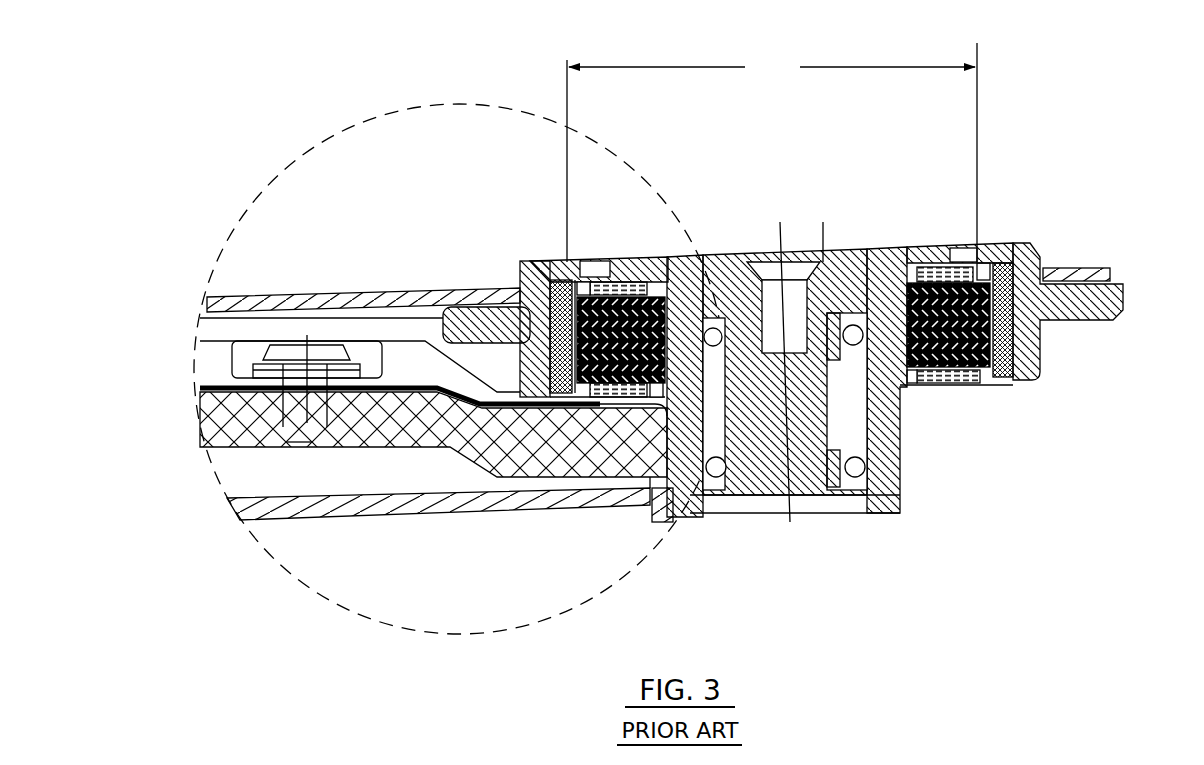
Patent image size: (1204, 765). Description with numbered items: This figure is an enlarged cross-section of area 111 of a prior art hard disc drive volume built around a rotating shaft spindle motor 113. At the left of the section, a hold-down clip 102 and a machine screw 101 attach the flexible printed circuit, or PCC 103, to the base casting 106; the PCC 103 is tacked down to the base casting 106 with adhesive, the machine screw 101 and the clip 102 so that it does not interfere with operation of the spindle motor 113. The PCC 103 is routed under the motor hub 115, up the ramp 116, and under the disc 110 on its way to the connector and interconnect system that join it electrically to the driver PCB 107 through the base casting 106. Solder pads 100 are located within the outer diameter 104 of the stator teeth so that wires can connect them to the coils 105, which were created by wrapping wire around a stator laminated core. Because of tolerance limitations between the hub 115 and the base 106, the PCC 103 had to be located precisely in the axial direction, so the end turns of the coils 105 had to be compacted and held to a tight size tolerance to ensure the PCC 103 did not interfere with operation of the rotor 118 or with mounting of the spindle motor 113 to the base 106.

The solder pads 100 is at (618, 395).
The machine screw 101 is at (295, 348).
The hold-down clip 102 is at (249, 356).
The PCC 103 is at (424, 360).
The outer diameter of stator teeth 104 is at (772, 152).
The coils 105 is at (937, 262).
The base casting 106 is at (393, 440).
The driver PCB 107 is at (480, 503).
The disc 110 is at (437, 288).
The area 111 is at (268, 567).
The spindle motor 113 is at (932, 422).
The motor hub 115 is at (975, 382).
The ramp 116 is at (470, 396).
The rotor 118 is at (1007, 243).